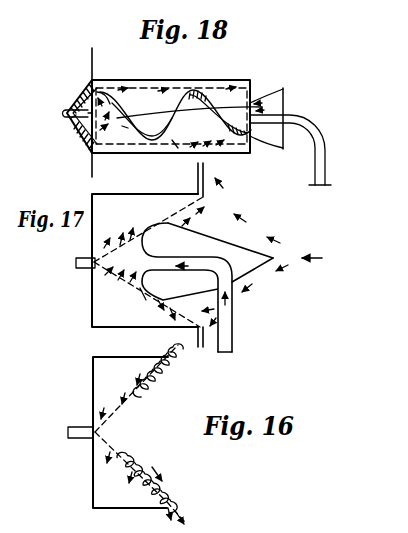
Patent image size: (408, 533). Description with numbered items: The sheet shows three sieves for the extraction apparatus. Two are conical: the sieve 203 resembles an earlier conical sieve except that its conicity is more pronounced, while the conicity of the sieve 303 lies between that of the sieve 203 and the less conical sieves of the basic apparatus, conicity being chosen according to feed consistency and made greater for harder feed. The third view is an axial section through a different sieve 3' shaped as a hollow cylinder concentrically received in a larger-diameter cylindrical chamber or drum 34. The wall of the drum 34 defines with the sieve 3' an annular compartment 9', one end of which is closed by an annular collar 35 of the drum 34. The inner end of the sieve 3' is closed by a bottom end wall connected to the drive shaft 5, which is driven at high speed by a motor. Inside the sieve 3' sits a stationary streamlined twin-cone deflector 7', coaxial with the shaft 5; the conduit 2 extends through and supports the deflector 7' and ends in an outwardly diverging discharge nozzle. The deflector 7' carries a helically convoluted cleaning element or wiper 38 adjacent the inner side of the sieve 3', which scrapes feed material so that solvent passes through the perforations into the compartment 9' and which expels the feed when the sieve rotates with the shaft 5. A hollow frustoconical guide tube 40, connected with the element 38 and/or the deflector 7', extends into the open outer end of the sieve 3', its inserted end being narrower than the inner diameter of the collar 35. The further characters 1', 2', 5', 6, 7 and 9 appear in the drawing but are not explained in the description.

In FIG. 18, the casing wall 1' is at (71, 112).
In FIG. 18, the outlet pipe 2' is at (290, 150).
In FIG. 18, the sieve 3' is at (145, 150).
In FIG. 18, the nozzle 5' is at (65, 123).
In FIG. 18, the deflector 7' is at (102, 103).
In FIG. 18, the annular compartment 9' is at (171, 131).
In FIG. 18, the drum 34 is at (152, 79).
In FIG. 18, the annular collar 35 is at (251, 83).
In FIG. 18, the cleaning element 38 is at (205, 88).
In FIG. 18, the guide tube 40 is at (283, 93).
In FIG. 17, the conduit 2 is at (229, 257).
In FIG. 17, the drive shaft 5 is at (81, 275).
In FIG. 16, the drive shaft 5 is at (79, 447).
In FIG. 17, the outlet pipe 6 is at (203, 346).
In FIG. 17, the deflector 7 is at (207, 287).
In FIG. 17, the chamber wall 9 is at (132, 260).
In FIG. 16, the chamber wall 9 is at (117, 432).
In FIG. 17, the sieve 203 is at (170, 221).
In FIG. 16, the sieve 303 is at (114, 408).